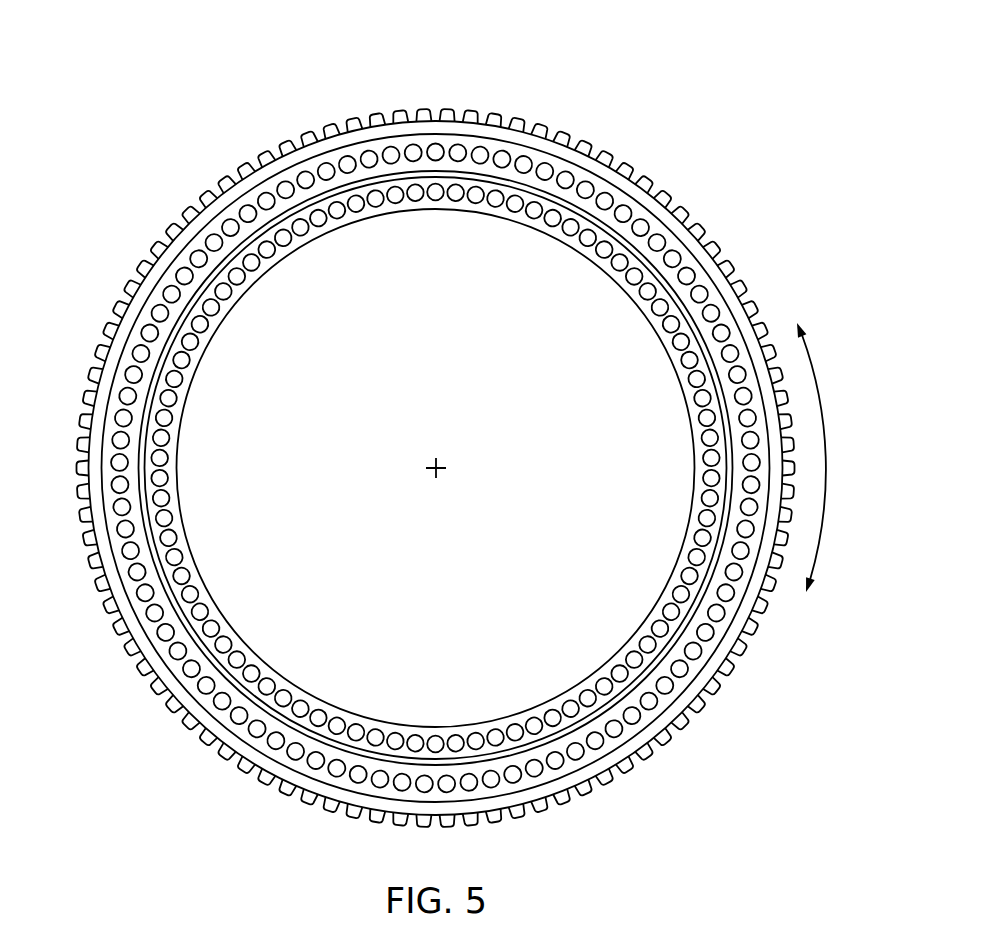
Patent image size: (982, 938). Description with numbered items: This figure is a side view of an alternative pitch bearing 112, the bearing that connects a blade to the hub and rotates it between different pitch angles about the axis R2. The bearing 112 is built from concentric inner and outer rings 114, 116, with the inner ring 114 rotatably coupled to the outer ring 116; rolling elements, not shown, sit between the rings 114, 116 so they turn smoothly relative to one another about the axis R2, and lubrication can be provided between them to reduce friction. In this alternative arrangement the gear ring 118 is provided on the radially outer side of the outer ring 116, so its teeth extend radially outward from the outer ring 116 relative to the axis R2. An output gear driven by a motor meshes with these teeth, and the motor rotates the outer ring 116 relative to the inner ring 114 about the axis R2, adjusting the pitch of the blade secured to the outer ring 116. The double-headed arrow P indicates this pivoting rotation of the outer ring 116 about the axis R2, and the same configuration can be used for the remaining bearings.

The pitch bearing 112 is at (150, 84).
The inner ring 114 is at (175, 585).
The outer ring 116 is at (158, 297).
The gear ring 118 is at (657, 194).
The axis R2 is at (442, 462).
The pivot direction P is at (827, 456).